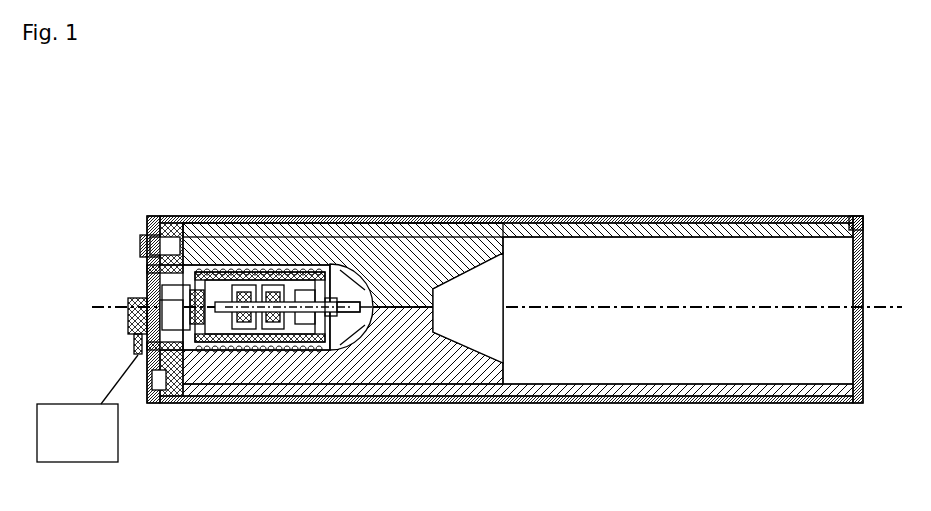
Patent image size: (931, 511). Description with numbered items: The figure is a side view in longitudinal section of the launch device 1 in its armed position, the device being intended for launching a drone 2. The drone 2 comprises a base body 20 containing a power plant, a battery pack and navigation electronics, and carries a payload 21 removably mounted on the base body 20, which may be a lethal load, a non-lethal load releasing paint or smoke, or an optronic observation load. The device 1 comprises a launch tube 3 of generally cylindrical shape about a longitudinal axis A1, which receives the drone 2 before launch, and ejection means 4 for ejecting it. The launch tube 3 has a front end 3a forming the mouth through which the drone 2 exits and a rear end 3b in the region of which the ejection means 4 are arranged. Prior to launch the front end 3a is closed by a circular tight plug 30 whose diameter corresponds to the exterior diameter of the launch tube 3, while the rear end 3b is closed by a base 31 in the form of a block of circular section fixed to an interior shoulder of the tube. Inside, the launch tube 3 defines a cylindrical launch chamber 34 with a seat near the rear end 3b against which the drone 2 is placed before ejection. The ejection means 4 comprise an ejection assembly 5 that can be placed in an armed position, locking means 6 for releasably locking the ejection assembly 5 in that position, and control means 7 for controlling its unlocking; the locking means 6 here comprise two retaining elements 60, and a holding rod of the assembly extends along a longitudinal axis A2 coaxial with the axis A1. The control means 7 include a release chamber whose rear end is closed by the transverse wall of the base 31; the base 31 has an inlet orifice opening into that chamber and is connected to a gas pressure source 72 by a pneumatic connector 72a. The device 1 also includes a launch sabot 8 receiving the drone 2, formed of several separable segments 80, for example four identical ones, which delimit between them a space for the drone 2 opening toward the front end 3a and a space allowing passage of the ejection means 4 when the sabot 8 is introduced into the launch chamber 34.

The launch device 1 is at (601, 148).
The drone 2 is at (768, 230).
The launch tube 3 is at (521, 214).
The front end 3a is at (855, 216).
The rear end 3b is at (168, 214).
The ejection means 4 is at (276, 266).
The ejection assembly 5 is at (370, 336).
The locking means 6 is at (250, 325).
The control means 7 is at (183, 325).
The launch sabot 8 is at (409, 232).
The base body 20 is at (753, 325).
The payload 21 is at (455, 320).
The tight plug 30 is at (866, 355).
The base 31 is at (146, 266).
The launch chamber 34 is at (290, 370).
The retaining elements 60 is at (376, 296).
The gas pressure source 72 is at (87, 408).
The pneumatic connector 72a is at (130, 300).
The separable segments 80 is at (415, 368).
The longitudinal axis A1 is at (497, 294).
The longitudinal axis A2 is at (108, 307).